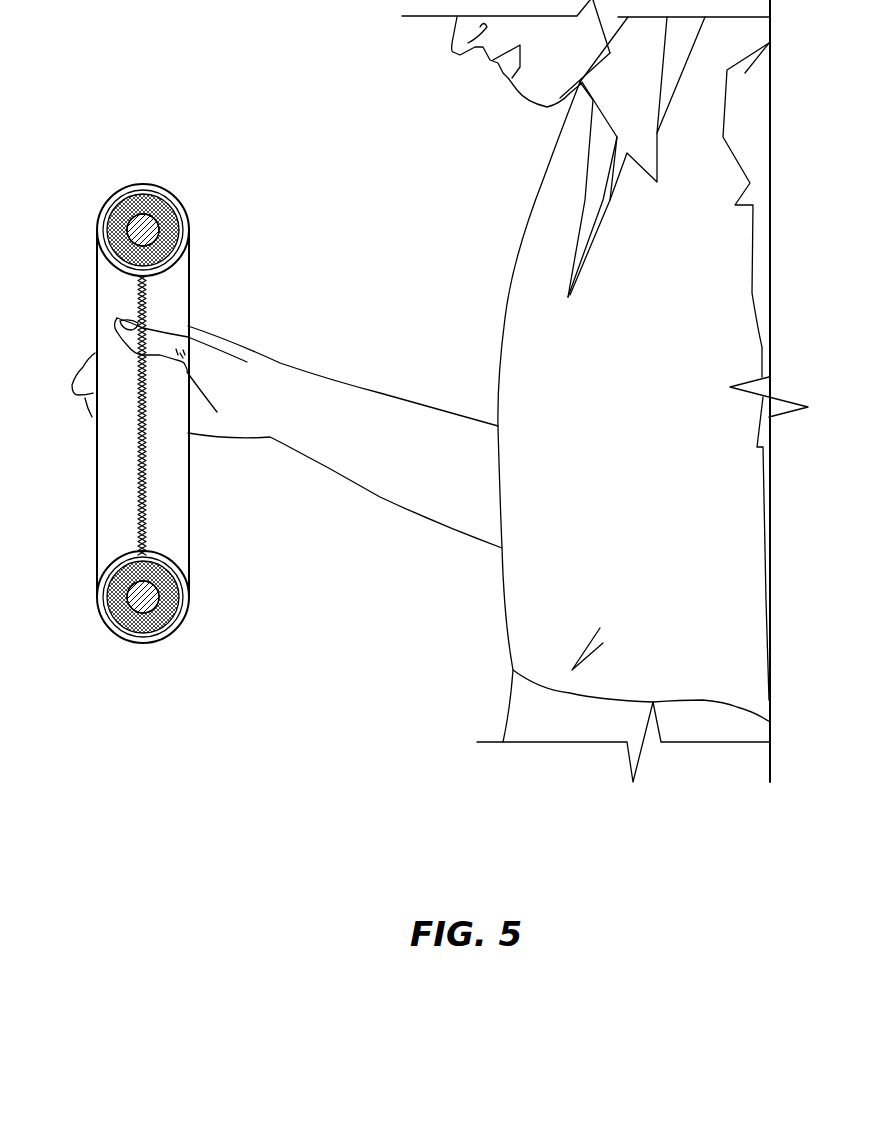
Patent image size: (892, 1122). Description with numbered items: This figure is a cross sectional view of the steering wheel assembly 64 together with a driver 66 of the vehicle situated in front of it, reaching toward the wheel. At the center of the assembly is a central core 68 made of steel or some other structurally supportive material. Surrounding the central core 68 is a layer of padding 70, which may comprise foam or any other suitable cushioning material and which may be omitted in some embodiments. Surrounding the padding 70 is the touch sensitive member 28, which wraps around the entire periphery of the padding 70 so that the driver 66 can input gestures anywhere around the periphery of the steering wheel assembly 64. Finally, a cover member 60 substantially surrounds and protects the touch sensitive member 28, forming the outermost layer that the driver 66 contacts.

The touch sensitive member 28 is at (117, 197).
The cover member 60 is at (143, 185).
The steering wheel assembly 64 is at (92, 264).
The driver 66 is at (522, 228).
The central core 68 is at (153, 228).
The layer of padding 70 is at (142, 200).